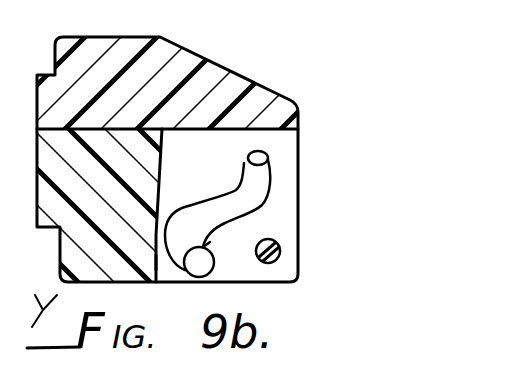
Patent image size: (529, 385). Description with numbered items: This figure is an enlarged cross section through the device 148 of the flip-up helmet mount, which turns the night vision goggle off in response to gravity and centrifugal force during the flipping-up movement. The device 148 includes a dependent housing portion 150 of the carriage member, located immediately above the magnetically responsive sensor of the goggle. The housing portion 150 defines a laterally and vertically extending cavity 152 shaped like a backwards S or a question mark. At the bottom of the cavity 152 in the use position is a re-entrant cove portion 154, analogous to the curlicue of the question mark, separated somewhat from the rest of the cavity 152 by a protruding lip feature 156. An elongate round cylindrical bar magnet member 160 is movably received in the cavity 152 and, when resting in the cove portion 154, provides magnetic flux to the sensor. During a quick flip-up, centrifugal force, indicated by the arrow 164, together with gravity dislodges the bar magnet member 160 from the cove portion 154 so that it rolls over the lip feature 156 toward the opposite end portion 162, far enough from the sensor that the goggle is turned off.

The device 148 is at (303, 68).
The dependent housing portion 150 is at (317, 168).
The cavity 152 is at (249, 209).
The re-entrant cove portion 154 is at (200, 277).
The protruding lip feature 156 is at (203, 247).
The bar magnet member 160 is at (184, 262).
The opposite end portion 162 is at (268, 160).
The arrow 164 is at (36, 296).